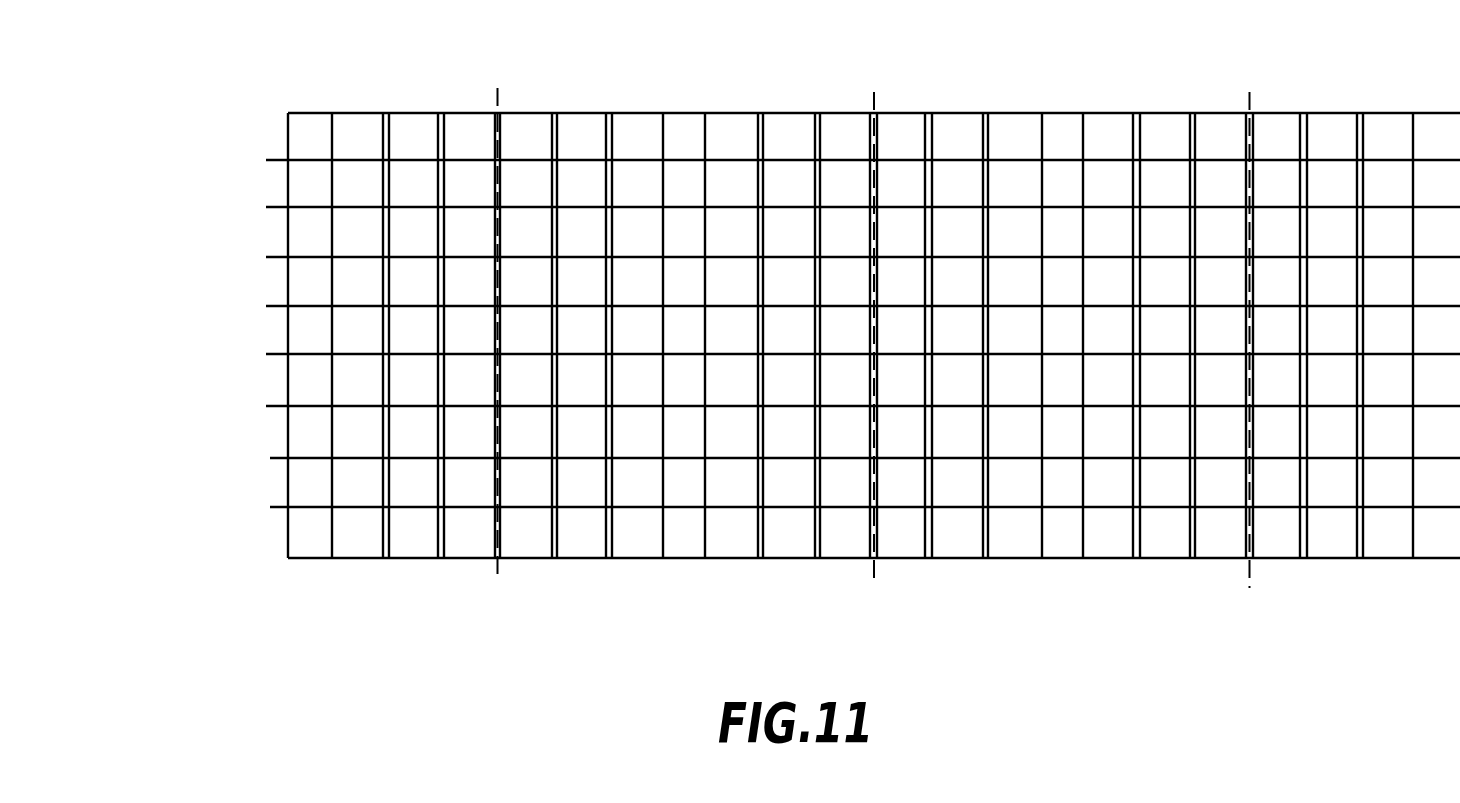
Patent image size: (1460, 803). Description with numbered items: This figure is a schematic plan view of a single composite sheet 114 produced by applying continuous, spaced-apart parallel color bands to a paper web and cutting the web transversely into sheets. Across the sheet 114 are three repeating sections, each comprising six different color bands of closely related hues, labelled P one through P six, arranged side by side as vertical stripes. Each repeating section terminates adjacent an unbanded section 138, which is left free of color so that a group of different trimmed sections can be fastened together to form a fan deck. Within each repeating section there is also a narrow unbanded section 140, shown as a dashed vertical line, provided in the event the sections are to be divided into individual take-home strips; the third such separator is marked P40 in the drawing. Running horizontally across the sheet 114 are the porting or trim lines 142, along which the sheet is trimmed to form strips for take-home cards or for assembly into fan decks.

The sheet 114 is at (815, 329).
The unbanded section 138 is at (313, 542).
The narrow unbanded section 140 is at (500, 560).
The horizontal porting or trim lines 142 is at (270, 158).
The dashed separator line (labelled P40) P40 is at (1253, 560).